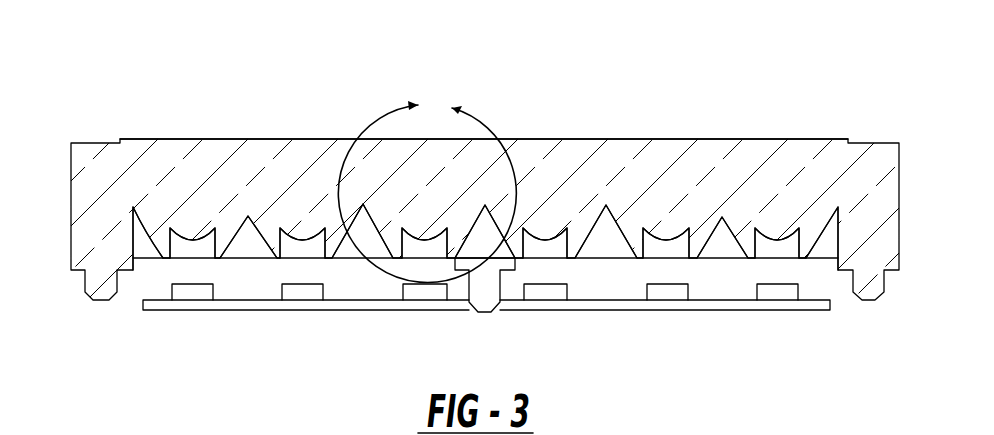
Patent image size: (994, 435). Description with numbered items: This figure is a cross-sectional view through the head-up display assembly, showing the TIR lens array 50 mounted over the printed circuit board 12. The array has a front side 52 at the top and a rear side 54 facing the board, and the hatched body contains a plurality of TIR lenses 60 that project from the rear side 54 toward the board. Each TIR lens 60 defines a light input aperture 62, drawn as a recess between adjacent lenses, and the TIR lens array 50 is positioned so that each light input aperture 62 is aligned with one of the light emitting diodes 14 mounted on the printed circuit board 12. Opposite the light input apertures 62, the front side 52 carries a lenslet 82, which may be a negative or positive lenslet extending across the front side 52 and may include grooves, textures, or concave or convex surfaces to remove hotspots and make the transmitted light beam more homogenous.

The TIR lens array 50 is at (192, 72).
The front side 52 is at (97, 141).
The lenslet 82 is at (210, 138).
The rear side 54 is at (167, 262).
The TIR lenses 60 is at (271, 256).
The light input aperture 62 is at (213, 243).
The printed circuit board 12 is at (630, 303).
The light emitting diodes 14 is at (780, 290).